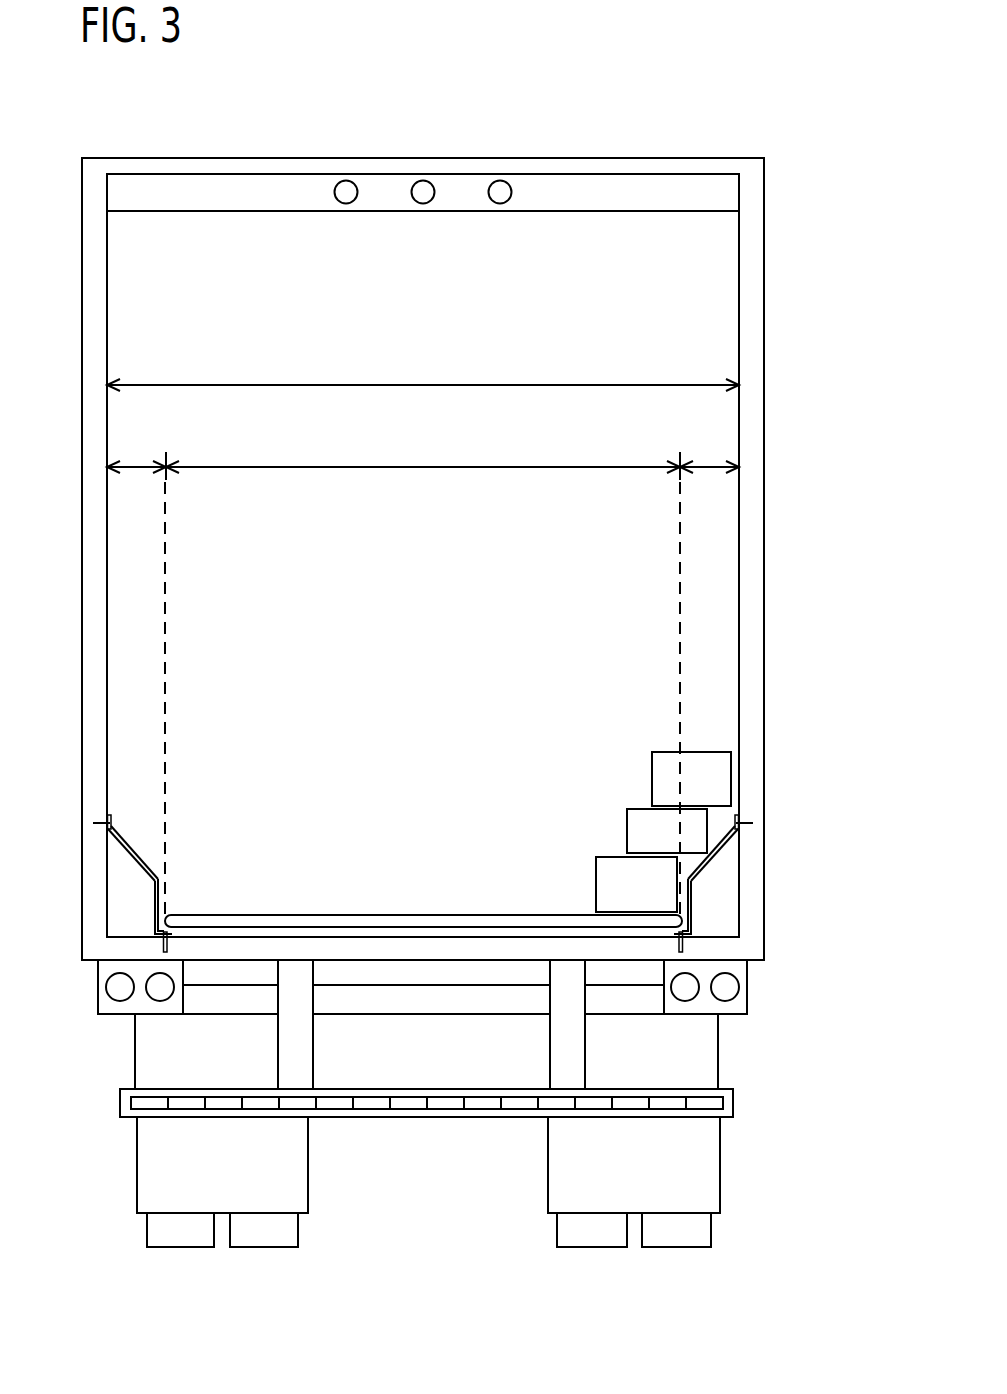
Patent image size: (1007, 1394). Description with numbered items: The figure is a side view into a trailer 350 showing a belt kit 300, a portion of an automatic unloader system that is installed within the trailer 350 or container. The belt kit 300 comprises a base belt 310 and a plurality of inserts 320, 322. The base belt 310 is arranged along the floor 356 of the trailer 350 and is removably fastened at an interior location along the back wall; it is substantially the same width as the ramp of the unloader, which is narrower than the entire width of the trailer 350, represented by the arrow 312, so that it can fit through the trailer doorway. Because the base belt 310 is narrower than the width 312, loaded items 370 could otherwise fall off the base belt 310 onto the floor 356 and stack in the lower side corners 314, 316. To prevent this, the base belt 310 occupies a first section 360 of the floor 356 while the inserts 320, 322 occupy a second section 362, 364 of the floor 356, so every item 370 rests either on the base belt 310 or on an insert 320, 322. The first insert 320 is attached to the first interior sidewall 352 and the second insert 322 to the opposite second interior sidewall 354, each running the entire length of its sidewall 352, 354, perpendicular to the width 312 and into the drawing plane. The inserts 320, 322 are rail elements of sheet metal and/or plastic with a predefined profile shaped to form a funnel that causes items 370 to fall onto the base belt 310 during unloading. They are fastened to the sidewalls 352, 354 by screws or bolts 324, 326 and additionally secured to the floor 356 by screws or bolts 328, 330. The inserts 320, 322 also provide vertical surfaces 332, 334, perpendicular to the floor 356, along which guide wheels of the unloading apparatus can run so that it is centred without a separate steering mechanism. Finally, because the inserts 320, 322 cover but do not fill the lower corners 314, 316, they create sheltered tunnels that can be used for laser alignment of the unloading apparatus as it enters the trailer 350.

The belt kit 300 is at (674, 83).
The base belt 310 is at (420, 930).
The width of the trailer 312 is at (422, 384).
The lower side corner 314 is at (132, 920).
The lower side corner 316 is at (714, 920).
The first insert 320 is at (120, 851).
The second insert 322 is at (726, 851).
The screw or bolt 324 is at (98, 820).
The screw or bolt 326 is at (748, 820).
The screw or bolt 328 is at (162, 945).
The screw or bolt 330 is at (684, 945).
The surface 332 is at (155, 910).
The surface 334 is at (691, 910).
The trailer 350 is at (422, 158).
The first interior sidewall 352 is at (107, 312).
The second interior sidewall 354 is at (739, 312).
The floor 356 is at (250, 931).
The first section 360 is at (422, 466).
The second section 362 is at (134, 465).
The second section 364 is at (712, 465).
The items 370 is at (625, 793).